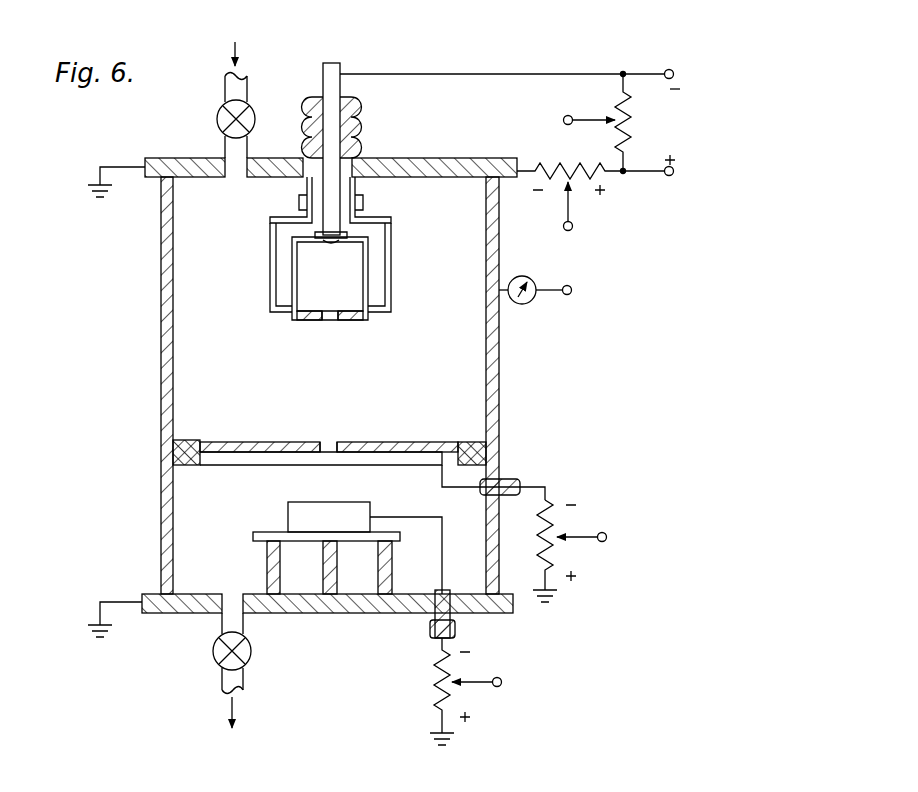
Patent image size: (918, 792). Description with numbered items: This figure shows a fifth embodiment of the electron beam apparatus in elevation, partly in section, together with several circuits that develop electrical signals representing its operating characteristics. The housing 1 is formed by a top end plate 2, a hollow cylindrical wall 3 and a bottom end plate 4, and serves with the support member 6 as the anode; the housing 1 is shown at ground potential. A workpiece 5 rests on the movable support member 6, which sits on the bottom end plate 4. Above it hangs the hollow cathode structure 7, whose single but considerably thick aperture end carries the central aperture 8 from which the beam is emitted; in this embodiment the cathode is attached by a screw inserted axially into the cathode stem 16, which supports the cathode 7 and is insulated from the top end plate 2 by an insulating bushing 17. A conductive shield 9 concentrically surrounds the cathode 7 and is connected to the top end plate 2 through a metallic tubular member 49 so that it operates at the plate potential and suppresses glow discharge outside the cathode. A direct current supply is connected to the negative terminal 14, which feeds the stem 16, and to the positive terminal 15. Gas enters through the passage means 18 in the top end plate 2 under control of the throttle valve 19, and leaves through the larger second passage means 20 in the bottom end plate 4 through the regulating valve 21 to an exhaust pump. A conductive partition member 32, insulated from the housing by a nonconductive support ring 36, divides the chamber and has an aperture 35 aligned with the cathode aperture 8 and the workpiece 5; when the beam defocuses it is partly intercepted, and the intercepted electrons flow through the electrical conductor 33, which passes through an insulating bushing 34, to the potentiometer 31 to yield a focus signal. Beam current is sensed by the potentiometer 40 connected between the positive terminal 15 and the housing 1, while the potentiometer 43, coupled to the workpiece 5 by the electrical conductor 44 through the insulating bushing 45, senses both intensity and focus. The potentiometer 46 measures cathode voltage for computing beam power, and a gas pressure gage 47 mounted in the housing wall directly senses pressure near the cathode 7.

The housing 1 is at (499, 360).
The top end plate 2 is at (440, 160).
The hollow cylindrical wall 3 is at (161, 242).
The bottom end plate 4 is at (385, 612).
The workpiece 5 is at (288, 508).
The support member 6 is at (253, 535).
The cathode structure 7 is at (297, 268).
The aperture 8 is at (330, 322).
The shield 9 is at (391, 272).
The negative terminal 14 is at (674, 74).
The positive terminal 15 is at (674, 171).
The cathode stem 16 is at (323, 80).
The insulating bushing 17 is at (362, 125).
The passage means 18 is at (225, 145).
The throttle valve 19 is at (217, 119).
The second passage means 20 is at (222, 625).
The regulating valve 21 is at (251, 651).
The potentiometer 31 is at (540, 540).
The partition member 32 is at (418, 428).
The electrical conductor 33 is at (545, 487).
The insulating bushing 34 is at (510, 479).
The aperture 35 is at (330, 440).
The support ring 36 is at (185, 465).
The potentiometer 40 is at (572, 163).
The potentiometer 43 is at (435, 674).
The electrical conductor 44 is at (442, 560).
The insulating bushing 45 is at (455, 630).
The potentiometer 46 is at (633, 122).
The gas pressure gage 47 is at (532, 280).
The tubular member 49 is at (355, 190).